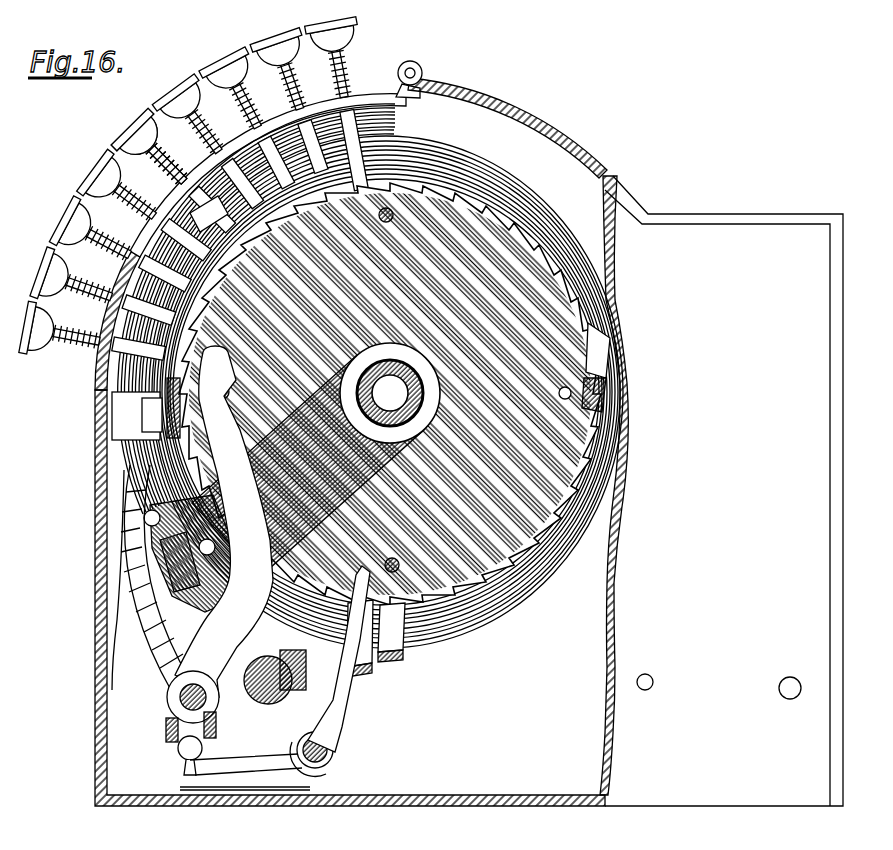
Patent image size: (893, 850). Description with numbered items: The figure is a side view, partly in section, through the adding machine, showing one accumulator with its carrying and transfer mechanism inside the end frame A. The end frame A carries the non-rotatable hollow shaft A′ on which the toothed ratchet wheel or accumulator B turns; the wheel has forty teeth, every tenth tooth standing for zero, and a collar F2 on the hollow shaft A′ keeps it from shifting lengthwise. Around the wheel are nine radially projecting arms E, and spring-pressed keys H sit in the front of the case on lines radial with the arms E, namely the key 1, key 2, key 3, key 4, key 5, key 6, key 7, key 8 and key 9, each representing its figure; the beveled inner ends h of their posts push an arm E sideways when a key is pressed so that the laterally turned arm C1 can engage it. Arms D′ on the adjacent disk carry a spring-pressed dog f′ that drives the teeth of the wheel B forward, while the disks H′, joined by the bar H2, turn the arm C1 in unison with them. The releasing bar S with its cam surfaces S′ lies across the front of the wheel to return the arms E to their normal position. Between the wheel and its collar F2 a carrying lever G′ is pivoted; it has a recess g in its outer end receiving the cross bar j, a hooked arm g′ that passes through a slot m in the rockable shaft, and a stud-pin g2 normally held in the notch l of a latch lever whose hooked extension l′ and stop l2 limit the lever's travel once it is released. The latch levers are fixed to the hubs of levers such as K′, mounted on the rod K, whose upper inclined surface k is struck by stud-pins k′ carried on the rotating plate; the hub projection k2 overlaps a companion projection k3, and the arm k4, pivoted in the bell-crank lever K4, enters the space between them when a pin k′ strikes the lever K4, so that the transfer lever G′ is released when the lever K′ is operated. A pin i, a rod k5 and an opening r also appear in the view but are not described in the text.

The spring-pressed key H is at (135, 124).
The key for figure one 1 is at (61, 333).
The key for figure two 2 is at (75, 284).
The key for figure three 3 is at (95, 237).
The key for figure four 4 is at (123, 193).
The key for figure five 5 is at (156, 153).
The key for figure six 6 is at (195, 120).
The key for figure seven 7 is at (240, 93).
The key for figure eight 8 is at (287, 73).
The key for figure nine 9 is at (337, 59).
The radially projecting arm E is at (372, 160).
The beveled inner end of key post h is at (209, 214).
The end frame A is at (386, 387).
The ratchet wheel or accumulator B is at (390, 394).
The stud-pin k′ is at (394, 220).
The collar F2 is at (442, 374).
The hollow shaft A′ is at (422, 406).
The spring-pressed dog f′ is at (606, 352).
The arm of disk D D′ is at (604, 375).
The arm of disk C C1 is at (391, 632).
The carrying lever G′ is at (308, 466).
The pin i is at (560, 398).
The inclined surface k is at (216, 382).
The lever K′ is at (224, 521).
The rod K is at (178, 700).
The projection k2 is at (164, 732).
The projection k3 is at (218, 728).
The upwardly projecting arm k4 is at (178, 756).
The rod k5 is at (243, 792).
The bell-crank lever K4 is at (340, 712).
The transverse slot m is at (268, 704).
The hooked arm g′ is at (300, 692).
The recess g is at (215, 602).
The stud-pin g2 is at (160, 540).
The cross bar j is at (186, 592).
The notch l is at (143, 520).
The hooked extension l′ is at (152, 578).
The stop l2 is at (120, 462).
The releasing bar S is at (135, 452).
The cam surface S′ is at (161, 408).
The disk H′ is at (497, 622).
The bar H2 is at (396, 660).
The screw hole r is at (786, 698).